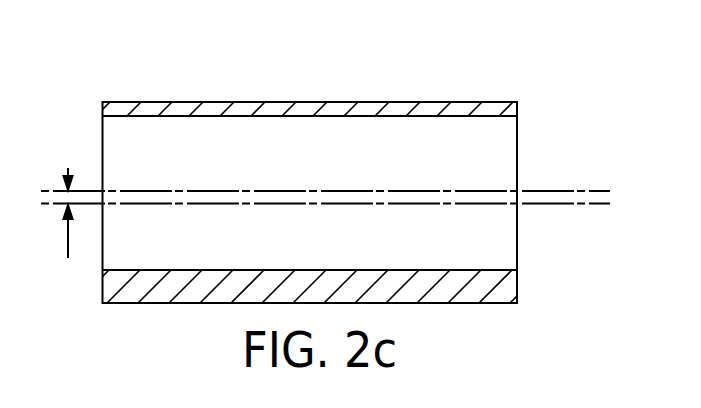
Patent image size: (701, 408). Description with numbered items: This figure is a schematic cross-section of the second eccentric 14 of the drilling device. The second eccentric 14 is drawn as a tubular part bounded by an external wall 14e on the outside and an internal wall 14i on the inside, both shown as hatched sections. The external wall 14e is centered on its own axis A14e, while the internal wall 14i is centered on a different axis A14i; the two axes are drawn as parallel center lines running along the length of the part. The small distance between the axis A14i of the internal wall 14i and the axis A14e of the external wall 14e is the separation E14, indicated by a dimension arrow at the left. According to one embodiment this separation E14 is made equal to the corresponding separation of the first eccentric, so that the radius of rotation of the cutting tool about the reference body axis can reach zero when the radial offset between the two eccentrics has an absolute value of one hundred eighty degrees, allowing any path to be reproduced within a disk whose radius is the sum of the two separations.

The second eccentric 14 is at (345, 167).
The external wall 14e is at (383, 90).
The internal wall 14i is at (382, 129).
The axis of the internal wall A14i is at (629, 182).
The axis of the external wall A14e is at (629, 213).
The separation E14 is at (41, 213).